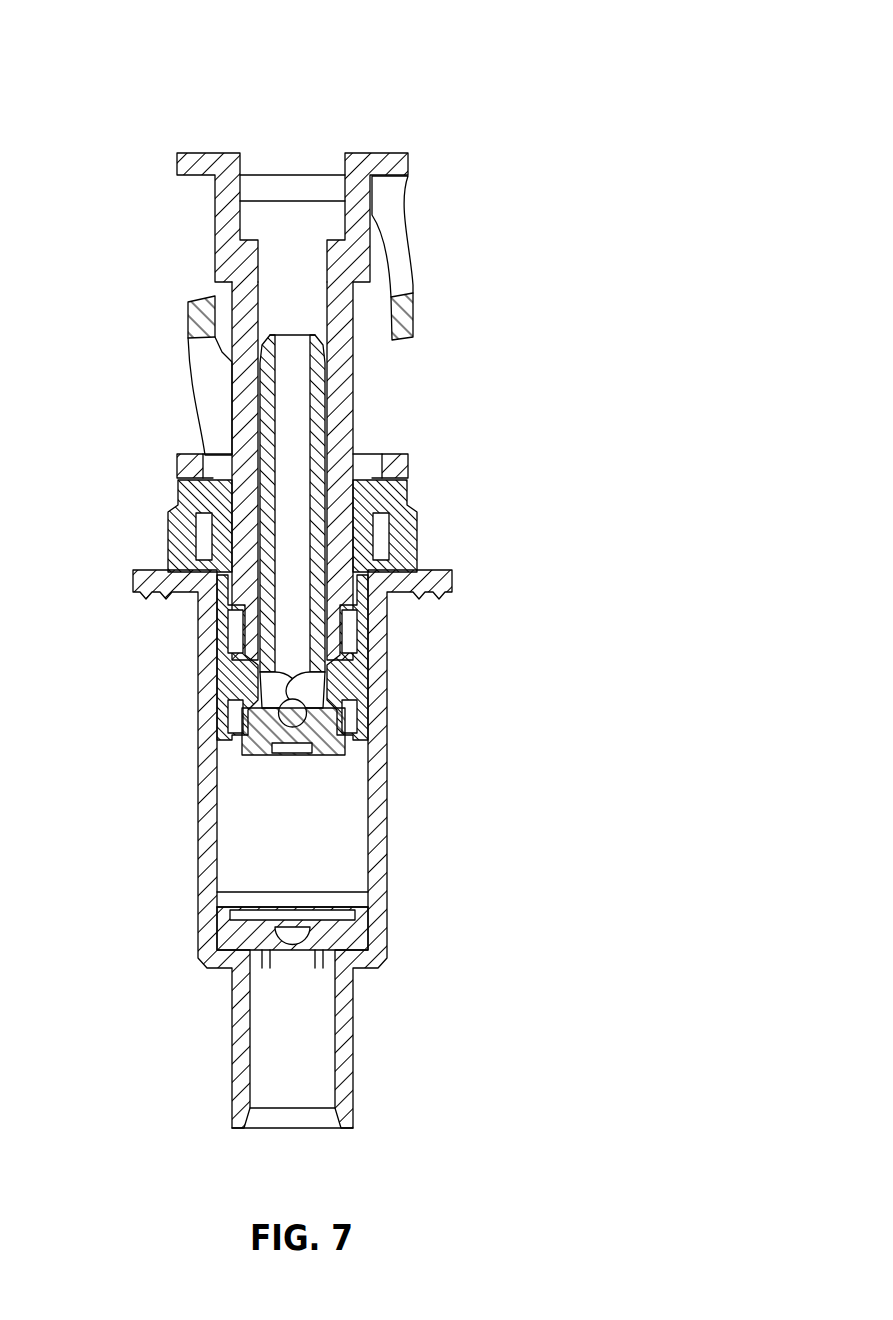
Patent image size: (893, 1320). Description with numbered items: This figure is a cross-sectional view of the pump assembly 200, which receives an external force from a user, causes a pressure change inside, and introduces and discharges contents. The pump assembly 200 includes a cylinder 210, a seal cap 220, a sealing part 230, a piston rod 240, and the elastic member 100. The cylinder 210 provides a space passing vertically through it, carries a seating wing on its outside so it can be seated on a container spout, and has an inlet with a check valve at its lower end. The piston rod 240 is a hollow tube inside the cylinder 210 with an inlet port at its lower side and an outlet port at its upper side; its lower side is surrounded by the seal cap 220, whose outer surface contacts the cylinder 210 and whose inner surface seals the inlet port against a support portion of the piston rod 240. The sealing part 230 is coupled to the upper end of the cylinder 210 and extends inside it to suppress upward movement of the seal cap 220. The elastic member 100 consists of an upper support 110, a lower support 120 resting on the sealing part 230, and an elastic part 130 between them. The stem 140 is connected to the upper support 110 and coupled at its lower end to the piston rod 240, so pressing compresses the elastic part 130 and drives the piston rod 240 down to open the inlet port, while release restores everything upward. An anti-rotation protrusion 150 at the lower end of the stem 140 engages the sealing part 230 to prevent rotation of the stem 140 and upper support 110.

The pump assembly 200 is at (548, 45).
The elastic member 100 is at (198, 233).
The upper support 110 is at (403, 173).
The elastic part 130 is at (415, 295).
The anti-rotation protrusion 150 is at (232, 433).
The stem 140 is at (355, 388).
The lower support 120 is at (408, 467).
The sealing part 230 is at (168, 510).
The seal cap 220 is at (215, 662).
The cylinder 210 is at (198, 817).
The piston rod 240 is at (335, 750).